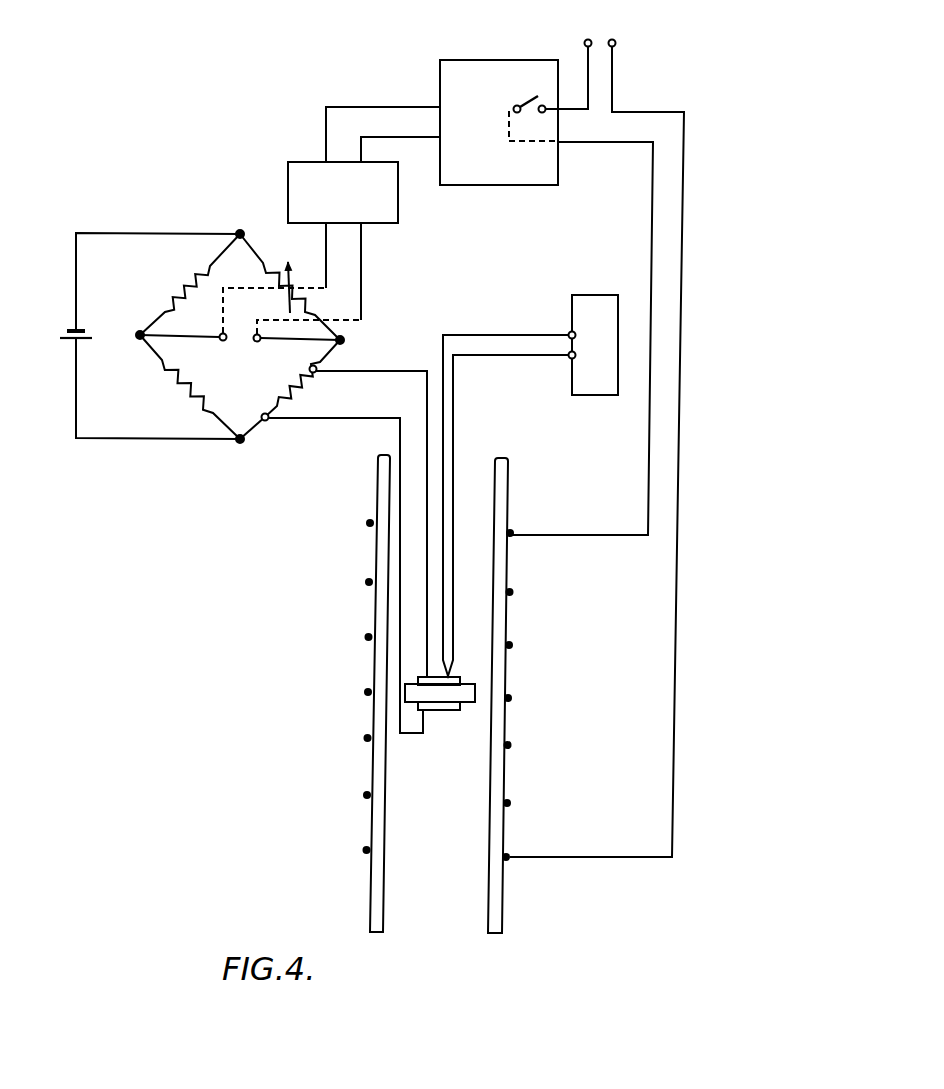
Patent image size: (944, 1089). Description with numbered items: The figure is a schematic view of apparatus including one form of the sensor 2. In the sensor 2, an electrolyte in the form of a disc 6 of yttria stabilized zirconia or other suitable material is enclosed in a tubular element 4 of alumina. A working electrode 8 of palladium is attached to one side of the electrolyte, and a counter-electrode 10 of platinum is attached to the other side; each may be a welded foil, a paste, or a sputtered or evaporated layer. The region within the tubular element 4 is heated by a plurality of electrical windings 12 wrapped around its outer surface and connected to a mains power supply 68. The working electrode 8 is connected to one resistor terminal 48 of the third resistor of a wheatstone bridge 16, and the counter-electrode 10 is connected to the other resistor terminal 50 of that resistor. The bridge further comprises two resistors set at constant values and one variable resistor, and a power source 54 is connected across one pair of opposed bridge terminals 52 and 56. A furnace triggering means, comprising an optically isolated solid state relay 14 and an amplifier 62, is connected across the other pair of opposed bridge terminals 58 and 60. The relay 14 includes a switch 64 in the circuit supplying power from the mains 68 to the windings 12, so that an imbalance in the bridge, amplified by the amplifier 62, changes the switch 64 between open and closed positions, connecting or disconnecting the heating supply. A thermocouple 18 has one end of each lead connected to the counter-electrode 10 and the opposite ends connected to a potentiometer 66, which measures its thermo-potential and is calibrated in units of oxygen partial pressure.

The sensor 2 is at (480, 537).
The tubular element 4 is at (376, 897).
The disc 6 is at (476, 690).
The working electrode 8 is at (462, 710).
The counter-electrode 10 is at (460, 678).
The electrical windings 12 is at (510, 803).
The optically isolated solid state relay 14 is at (490, 177).
The wheatstone bridge 16 is at (250, 397).
The thermocouple 18 is at (458, 425).
The resistor terminal 48 is at (268, 421).
The resistor terminal 50 is at (316, 372).
The bridge terminal 52 is at (240, 230).
The power source 54 is at (68, 331).
The bridge terminal 56 is at (240, 443).
The bridge terminal 58 is at (222, 341).
The bridge terminal 60 is at (258, 342).
The amplifier 62 is at (300, 182).
The switch 64 is at (534, 96).
The potentiometer 66 is at (600, 296).
The mains power supply 68 is at (588, 39).